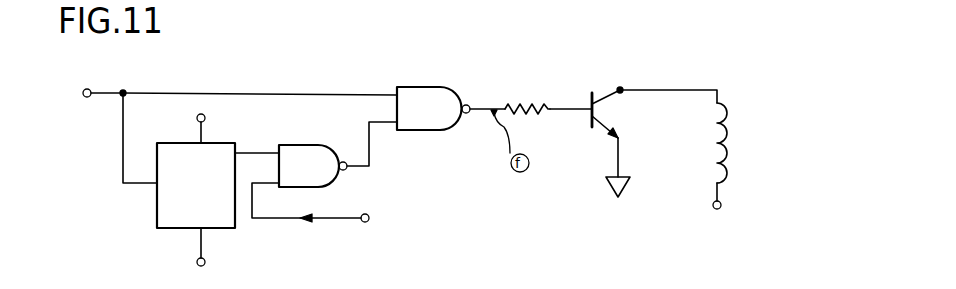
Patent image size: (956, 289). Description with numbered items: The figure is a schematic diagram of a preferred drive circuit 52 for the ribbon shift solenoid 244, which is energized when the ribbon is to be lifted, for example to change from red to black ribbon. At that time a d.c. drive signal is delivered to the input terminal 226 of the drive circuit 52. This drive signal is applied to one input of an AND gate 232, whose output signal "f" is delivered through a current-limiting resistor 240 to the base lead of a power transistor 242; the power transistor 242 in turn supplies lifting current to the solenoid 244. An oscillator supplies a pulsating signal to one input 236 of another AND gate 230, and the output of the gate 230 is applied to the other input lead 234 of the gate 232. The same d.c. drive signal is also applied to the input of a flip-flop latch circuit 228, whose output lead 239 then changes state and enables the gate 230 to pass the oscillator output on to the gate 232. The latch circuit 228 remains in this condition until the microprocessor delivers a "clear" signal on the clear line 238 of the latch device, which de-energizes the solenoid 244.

The input terminal 226 is at (93, 98).
The flip-flop latch circuit 228 is at (208, 203).
The AND gate 230 is at (297, 145).
The AND gate 232 is at (454, 88).
The input lead 234 is at (369, 141).
The input 236 is at (280, 221).
The clear line 238 is at (199, 244).
The output lead 239 is at (250, 150).
The current-limiting resistor 240 is at (527, 105).
The power transistor 242 is at (604, 84).
The ribbon shift solenoid 244 is at (733, 143).
The drive circuit 52 is at (608, 212).